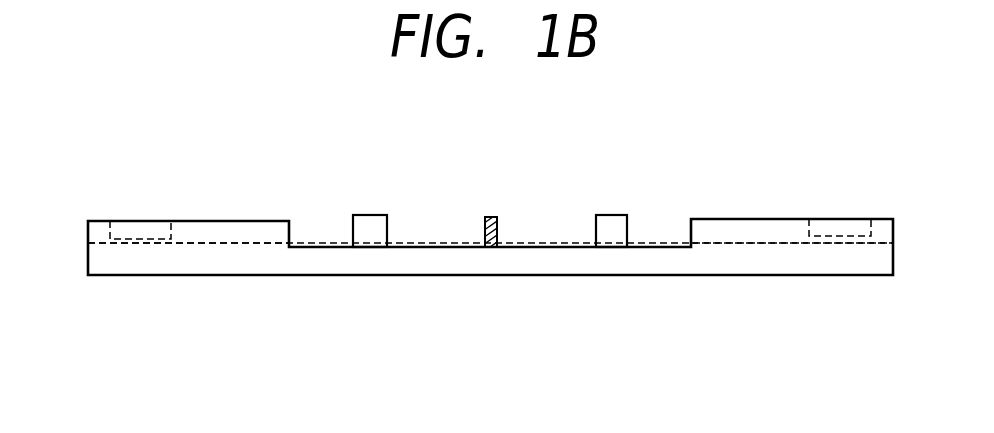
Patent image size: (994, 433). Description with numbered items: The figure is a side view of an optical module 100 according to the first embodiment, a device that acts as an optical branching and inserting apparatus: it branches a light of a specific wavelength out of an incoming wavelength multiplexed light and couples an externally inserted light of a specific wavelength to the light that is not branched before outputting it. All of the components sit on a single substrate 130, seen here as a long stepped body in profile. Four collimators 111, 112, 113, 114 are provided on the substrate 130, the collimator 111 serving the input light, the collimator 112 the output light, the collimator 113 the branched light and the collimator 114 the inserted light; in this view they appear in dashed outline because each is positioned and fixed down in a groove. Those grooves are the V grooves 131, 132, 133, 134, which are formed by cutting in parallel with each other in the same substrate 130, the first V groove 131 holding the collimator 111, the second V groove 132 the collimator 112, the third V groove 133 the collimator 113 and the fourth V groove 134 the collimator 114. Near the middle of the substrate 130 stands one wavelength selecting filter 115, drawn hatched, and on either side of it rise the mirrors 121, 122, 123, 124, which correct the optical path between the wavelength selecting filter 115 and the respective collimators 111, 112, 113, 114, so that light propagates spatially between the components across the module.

The optical module 100 is at (485, 226).
The collimator 111 is at (124, 300).
The collimator 112 is at (125, 244).
The collimator 113 is at (824, 297).
The collimator 114 is at (822, 238).
The wavelength selecting filter 115 is at (490, 217).
The mirror 121 is at (398, 207).
The mirror 122 is at (384, 194).
The mirror 123 is at (639, 206).
The mirror 124 is at (628, 193).
The substrate 130 is at (446, 262).
The first V groove 131 is at (188, 289).
The second V groove 132 is at (233, 241).
The third V groove 133 is at (782, 290).
The fourth V groove 134 is at (718, 243).